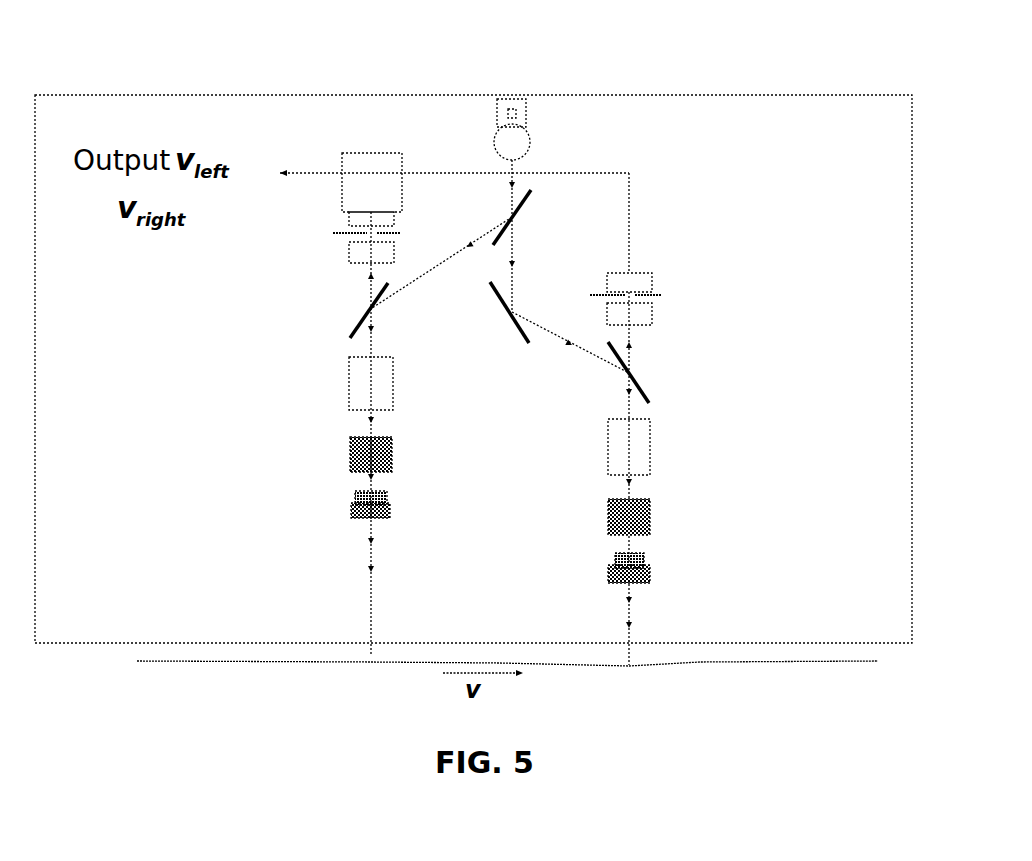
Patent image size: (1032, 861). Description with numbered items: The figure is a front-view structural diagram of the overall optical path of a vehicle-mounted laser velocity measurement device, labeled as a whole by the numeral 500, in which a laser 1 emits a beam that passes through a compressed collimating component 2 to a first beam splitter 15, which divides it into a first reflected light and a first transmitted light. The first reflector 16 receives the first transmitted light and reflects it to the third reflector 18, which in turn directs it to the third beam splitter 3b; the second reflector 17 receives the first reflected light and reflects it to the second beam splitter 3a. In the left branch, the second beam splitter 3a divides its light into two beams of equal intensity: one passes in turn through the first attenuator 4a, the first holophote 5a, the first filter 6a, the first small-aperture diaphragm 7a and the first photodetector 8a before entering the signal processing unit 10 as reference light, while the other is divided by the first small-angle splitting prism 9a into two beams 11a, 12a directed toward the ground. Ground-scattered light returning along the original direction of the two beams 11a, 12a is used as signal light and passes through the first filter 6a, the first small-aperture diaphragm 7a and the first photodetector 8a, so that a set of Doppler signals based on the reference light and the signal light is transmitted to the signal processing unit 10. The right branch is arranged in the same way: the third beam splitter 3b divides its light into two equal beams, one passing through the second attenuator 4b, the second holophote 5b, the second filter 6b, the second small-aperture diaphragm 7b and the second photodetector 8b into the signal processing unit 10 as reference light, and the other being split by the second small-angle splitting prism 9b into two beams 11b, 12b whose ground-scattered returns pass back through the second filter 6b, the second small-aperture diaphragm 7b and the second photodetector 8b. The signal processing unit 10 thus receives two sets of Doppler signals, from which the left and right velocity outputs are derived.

The optical measurement system 500 is at (808, 34).
The laser 1 is at (497, 113).
The compressed collimating component 2 is at (495, 150).
The signal processing unit 10 is at (375, 152).
The first beam splitter 15 is at (524, 205).
The first reflector 16 is at (497, 302).
The second reflector 17 is at (356, 325).
The third reflector 18 is at (645, 388).
The first photodetector 8a is at (349, 219).
The first small-aperture diaphragm 7a is at (400, 234).
The first filter 6a is at (349, 254).
The second beam splitter 3a is at (349, 372).
The first small-angle splitting prism 9a is at (392, 456).
The first attenuator 4a is at (355, 497).
The first holophote 5a is at (351, 510).
The beam 11a is at (366, 546).
The beam 12a is at (366, 574).
The second photodetector 8b is at (607, 283).
The second small-aperture diaphragm 7b is at (662, 297).
The second filter 6b is at (607, 315).
The third beam splitter 3b is at (608, 445).
The second small-angle splitting prism 9b is at (650, 520).
The second attenuator 4b is at (615, 558).
The second holophote 5b is at (608, 572).
The beam 11b is at (633, 603).
The beam 12b is at (633, 628).